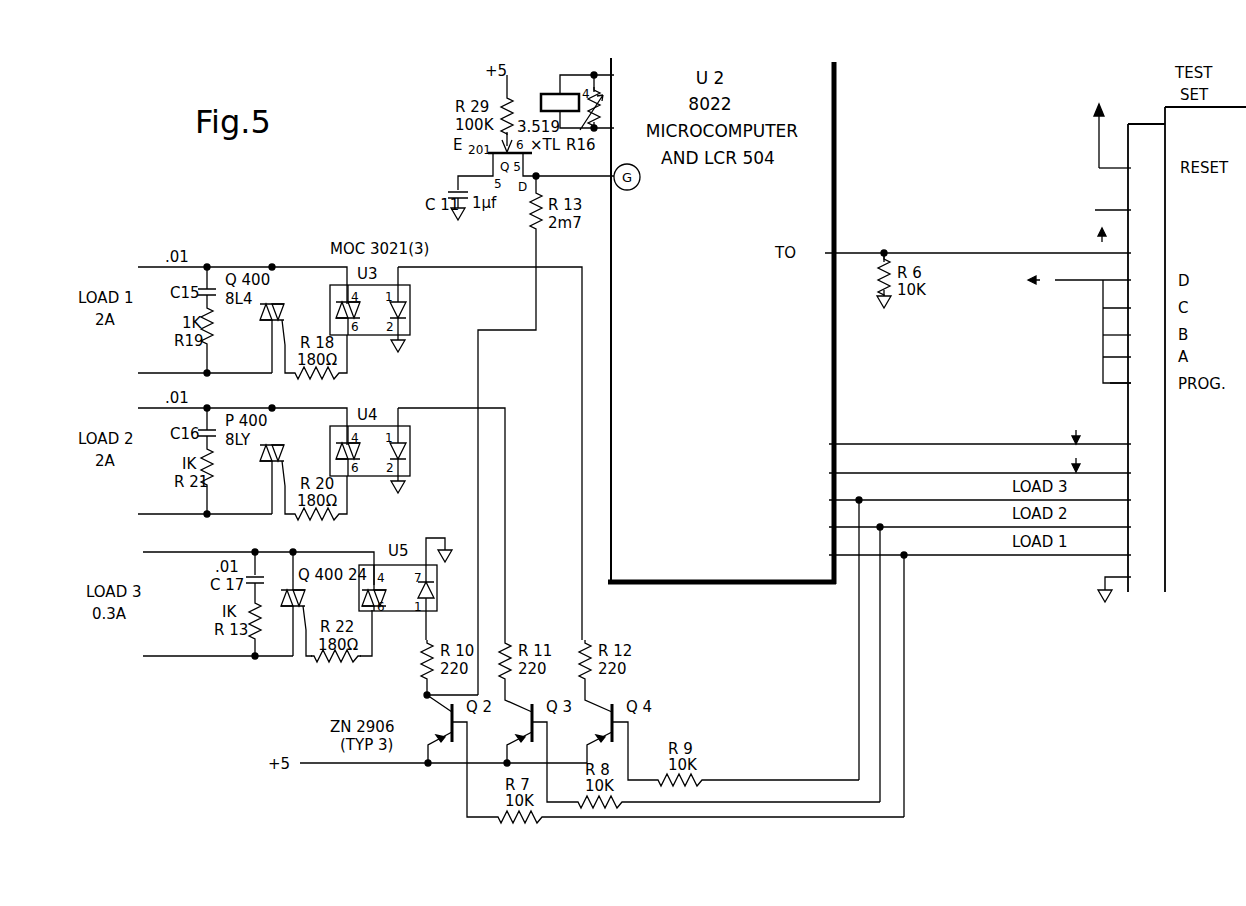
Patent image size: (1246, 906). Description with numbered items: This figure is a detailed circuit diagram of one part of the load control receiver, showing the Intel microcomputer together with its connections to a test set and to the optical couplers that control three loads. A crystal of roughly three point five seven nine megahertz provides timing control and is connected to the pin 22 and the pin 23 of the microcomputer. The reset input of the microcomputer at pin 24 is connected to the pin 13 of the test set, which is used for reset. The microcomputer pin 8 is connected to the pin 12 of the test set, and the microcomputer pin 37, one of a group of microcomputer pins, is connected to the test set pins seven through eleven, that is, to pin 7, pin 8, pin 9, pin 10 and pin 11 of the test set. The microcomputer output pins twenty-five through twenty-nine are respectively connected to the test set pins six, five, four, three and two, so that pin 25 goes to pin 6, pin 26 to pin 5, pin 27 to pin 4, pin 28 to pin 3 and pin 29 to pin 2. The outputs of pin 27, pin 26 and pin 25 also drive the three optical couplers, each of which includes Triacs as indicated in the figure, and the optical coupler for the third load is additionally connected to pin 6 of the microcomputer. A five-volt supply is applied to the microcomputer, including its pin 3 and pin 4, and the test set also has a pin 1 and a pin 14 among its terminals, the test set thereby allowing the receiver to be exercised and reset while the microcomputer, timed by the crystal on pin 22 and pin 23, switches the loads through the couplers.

The pin 1 is at (1128, 582).
The pin 2 is at (1082, 440).
The pin 3 is at (1063, 469).
The pin 4 is at (635, 384).
The pin 5 is at (635, 450).
The pin 6 is at (635, 482).
The pin 7 is at (635, 423).
The pin 8 is at (638, 402).
The pin 9 is at (205, 656).
The pin 10 is at (1107, 280).
The pin 11 is at (1131, 331).
The pin 12 is at (1078, 247).
The pin 13 is at (1129, 168).
The pin 14 is at (1108, 210).
The pin 22 is at (627, 75).
The pin 23 is at (627, 128).
The pin 24 is at (1115, 122).
The pin 25 is at (855, 679).
The pin 26 is at (843, 658).
The pin 27 is at (832, 633).
The pin 28 is at (967, 473).
The pin 29 is at (967, 444).
The pin 37 is at (1018, 291).